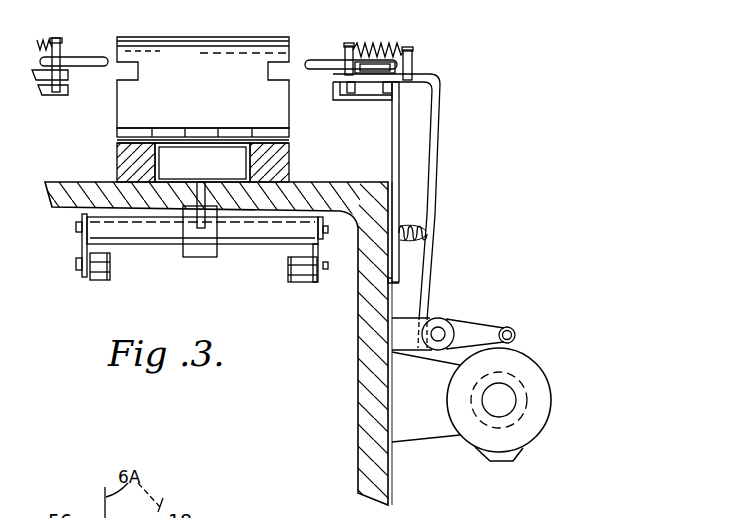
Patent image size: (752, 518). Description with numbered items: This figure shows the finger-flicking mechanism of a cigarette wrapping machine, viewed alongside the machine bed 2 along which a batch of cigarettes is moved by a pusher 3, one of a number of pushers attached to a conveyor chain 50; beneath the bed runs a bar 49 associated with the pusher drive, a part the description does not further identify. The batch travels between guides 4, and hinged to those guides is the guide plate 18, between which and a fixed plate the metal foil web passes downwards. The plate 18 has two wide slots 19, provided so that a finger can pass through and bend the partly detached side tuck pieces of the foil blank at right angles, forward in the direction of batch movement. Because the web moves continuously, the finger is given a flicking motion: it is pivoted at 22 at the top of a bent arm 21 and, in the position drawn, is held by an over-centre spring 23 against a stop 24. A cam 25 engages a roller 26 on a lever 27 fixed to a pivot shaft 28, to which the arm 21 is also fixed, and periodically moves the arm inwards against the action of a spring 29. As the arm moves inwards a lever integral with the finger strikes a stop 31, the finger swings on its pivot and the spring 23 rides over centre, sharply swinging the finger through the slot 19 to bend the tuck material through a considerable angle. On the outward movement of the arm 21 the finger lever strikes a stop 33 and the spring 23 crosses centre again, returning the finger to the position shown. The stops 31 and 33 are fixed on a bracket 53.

The machine bed 2 is at (372, 326).
The pusher 3 is at (206, 174).
The guides 4 is at (122, 158).
The guide plate 18 is at (207, 101).
The wide slots 19 is at (274, 78).
The bent arm 21 is at (436, 148).
The pivot 22 is at (410, 49).
The over-centre spring 23 is at (374, 48).
The stop 24 is at (330, 69).
The cam 25 is at (460, 398).
The roller 26 is at (516, 333).
The lever 27 is at (478, 330).
The pivot shaft 28 is at (442, 331).
The spring 29 is at (421, 228).
The stop 31 is at (341, 92).
The stop 33 is at (372, 93).
The lever bar 49 is at (262, 238).
The conveyor chain 50 is at (300, 283).
The bracket 53 is at (392, 148).